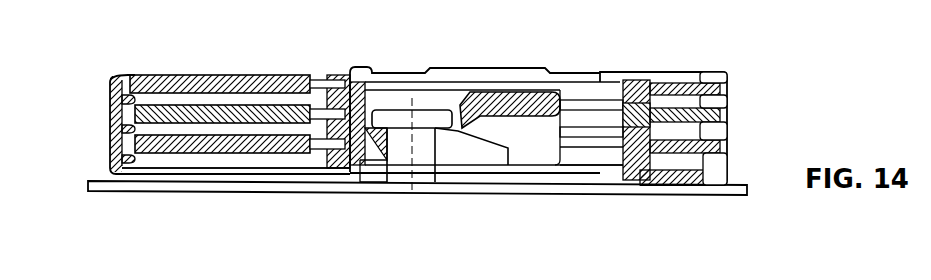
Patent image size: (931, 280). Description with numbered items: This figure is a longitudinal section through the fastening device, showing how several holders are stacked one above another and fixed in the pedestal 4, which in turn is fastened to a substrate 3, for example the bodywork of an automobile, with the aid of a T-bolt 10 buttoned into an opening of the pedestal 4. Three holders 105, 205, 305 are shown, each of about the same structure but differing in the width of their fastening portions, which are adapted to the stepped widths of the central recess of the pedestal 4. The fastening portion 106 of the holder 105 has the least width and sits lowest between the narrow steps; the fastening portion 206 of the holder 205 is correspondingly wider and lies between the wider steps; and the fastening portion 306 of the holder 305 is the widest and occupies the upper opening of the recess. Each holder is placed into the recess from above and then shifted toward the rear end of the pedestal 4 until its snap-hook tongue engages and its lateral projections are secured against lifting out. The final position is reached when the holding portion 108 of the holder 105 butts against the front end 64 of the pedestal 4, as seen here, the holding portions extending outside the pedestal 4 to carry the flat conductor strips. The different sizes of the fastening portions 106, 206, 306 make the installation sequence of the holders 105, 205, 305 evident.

The substrate 3 is at (720, 186).
The pedestal 4 is at (648, 62).
The T-bolt 10 is at (400, 160).
The front end 64 is at (347, 176).
The holder 105 is at (189, 183).
The fastening portion 106 is at (603, 149).
The holding portion 108 is at (257, 166).
The holder 205 is at (104, 123).
The fastening portion 206 is at (560, 158).
The holder 305 is at (218, 70).
The fastening portion 306 is at (575, 80).